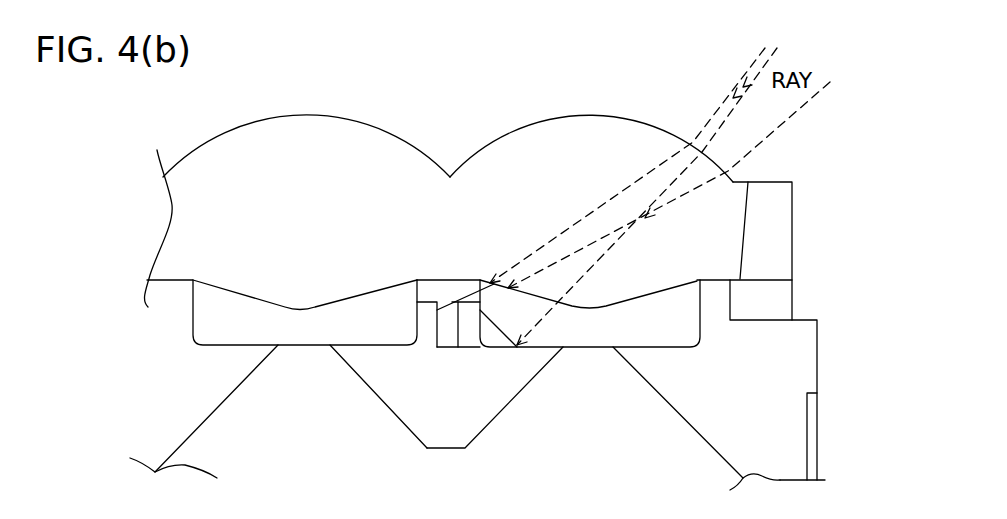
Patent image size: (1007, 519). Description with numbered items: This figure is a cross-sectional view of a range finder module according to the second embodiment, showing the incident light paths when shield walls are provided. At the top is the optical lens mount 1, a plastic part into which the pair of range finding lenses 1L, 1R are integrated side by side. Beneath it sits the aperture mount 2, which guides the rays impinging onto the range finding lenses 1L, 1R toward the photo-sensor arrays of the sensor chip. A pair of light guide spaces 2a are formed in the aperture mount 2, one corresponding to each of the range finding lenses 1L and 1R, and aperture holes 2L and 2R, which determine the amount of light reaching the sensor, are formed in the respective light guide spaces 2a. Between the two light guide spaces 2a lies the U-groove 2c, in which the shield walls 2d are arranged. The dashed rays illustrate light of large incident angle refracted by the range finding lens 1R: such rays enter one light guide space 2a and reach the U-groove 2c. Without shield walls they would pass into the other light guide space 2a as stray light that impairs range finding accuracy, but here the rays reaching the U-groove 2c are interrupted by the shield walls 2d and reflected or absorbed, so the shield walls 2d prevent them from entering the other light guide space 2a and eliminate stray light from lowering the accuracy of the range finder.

The optical lens mount 1 is at (782, 210).
The range finding lens 1L is at (303, 127).
The range finding lens 1R is at (579, 128).
The aperture mount 2 is at (787, 373).
The light guide space 2a is at (213, 333).
The U-groove 2c is at (450, 290).
The shield wall 2d is at (467, 345).
The aperture hole 2L is at (302, 378).
The aperture hole 2R is at (592, 378).